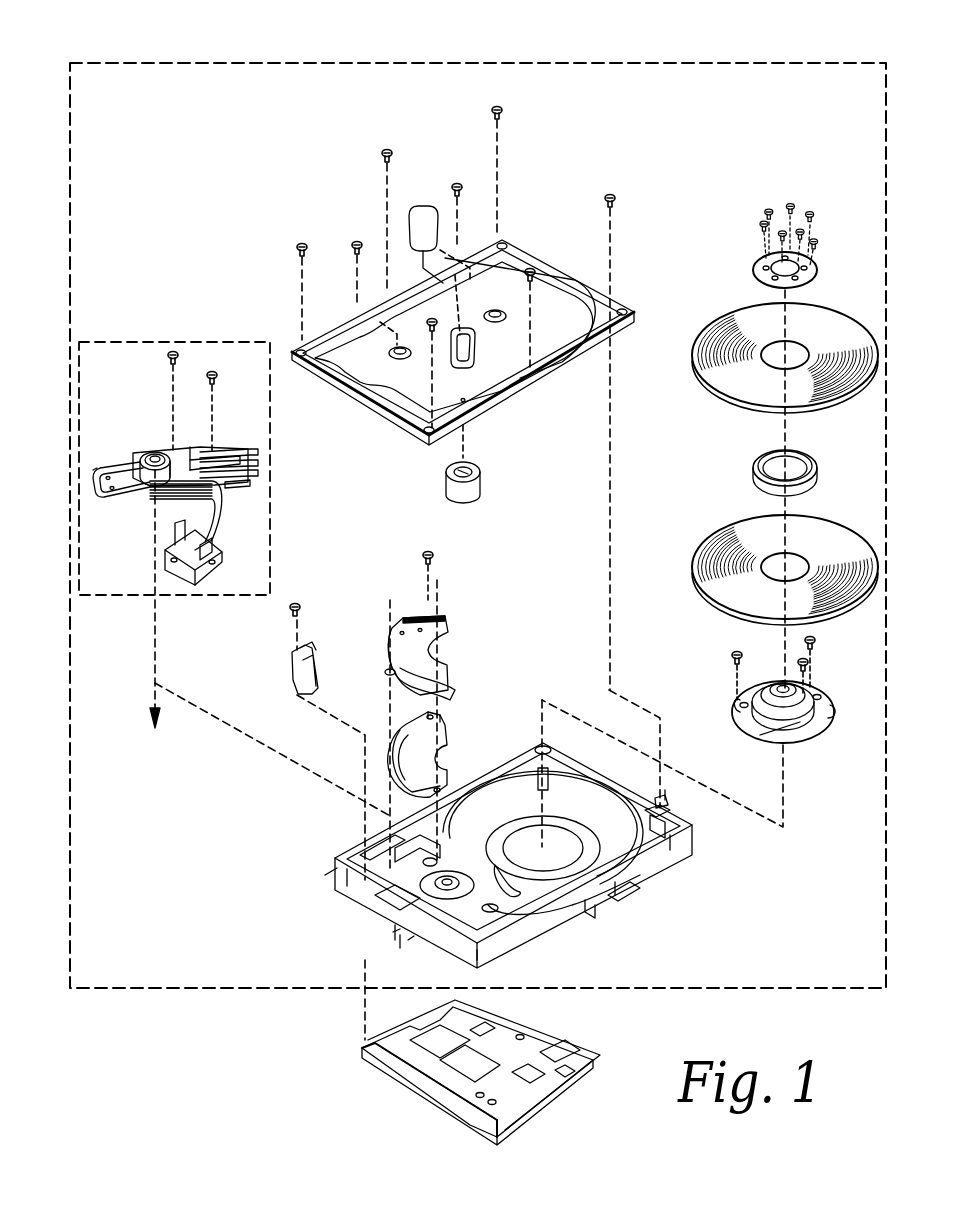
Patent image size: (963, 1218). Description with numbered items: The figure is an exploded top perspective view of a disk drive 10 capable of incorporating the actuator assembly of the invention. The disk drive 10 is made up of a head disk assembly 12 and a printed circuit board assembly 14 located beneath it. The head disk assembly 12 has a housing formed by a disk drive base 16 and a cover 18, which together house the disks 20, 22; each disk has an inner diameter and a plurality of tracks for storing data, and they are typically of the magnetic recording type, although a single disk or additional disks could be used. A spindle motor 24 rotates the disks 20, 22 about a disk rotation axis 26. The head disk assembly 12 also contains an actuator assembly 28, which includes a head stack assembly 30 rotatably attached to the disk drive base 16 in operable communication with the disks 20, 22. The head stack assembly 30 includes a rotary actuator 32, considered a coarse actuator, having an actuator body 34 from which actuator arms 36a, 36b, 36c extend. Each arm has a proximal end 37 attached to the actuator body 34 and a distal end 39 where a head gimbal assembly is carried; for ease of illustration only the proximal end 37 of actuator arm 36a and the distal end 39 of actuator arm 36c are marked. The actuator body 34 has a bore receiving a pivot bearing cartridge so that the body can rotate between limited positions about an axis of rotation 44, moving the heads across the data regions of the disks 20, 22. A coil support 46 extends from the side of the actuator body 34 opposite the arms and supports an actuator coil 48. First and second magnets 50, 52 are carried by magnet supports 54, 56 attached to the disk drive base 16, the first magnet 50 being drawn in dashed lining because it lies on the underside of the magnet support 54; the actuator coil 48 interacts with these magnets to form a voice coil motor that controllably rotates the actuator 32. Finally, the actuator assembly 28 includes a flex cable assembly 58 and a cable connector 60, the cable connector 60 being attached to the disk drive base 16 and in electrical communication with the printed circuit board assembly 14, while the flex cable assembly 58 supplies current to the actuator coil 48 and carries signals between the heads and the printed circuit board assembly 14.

The disk drive 10 is at (259, 54).
The head disk assembly 12 is at (190, 988).
The printed circuit board assembly 14 is at (578, 1072).
The disk drive base 16 is at (560, 930).
The cover 18 is at (555, 345).
The disk 20 is at (715, 330).
The disk 22 is at (715, 544).
The spindle motor 24 is at (816, 696).
The disk rotation axis 26 is at (786, 786).
The actuator assembly 28 is at (145, 342).
The head stack assembly 30 is at (205, 342).
The rotary actuator 32 is at (155, 452).
The actuator body 34 is at (140, 455).
The actuator arm 36a is at (210, 452).
The actuator arm 36b is at (248, 462).
The actuator arm 36c is at (248, 474).
The proximal end 37 is at (182, 449).
The distal end 39 is at (236, 485).
The axis of rotation 44 is at (157, 628).
The coil support 46 is at (108, 490).
The actuator coil 48 is at (100, 467).
The first magnet 50 is at (455, 648).
The second magnet 52 is at (395, 758).
The magnet support 54 is at (388, 645).
The magnet support 56 is at (440, 722).
The flex cable assembly 58 is at (216, 520).
The cable connector 60 is at (172, 566).